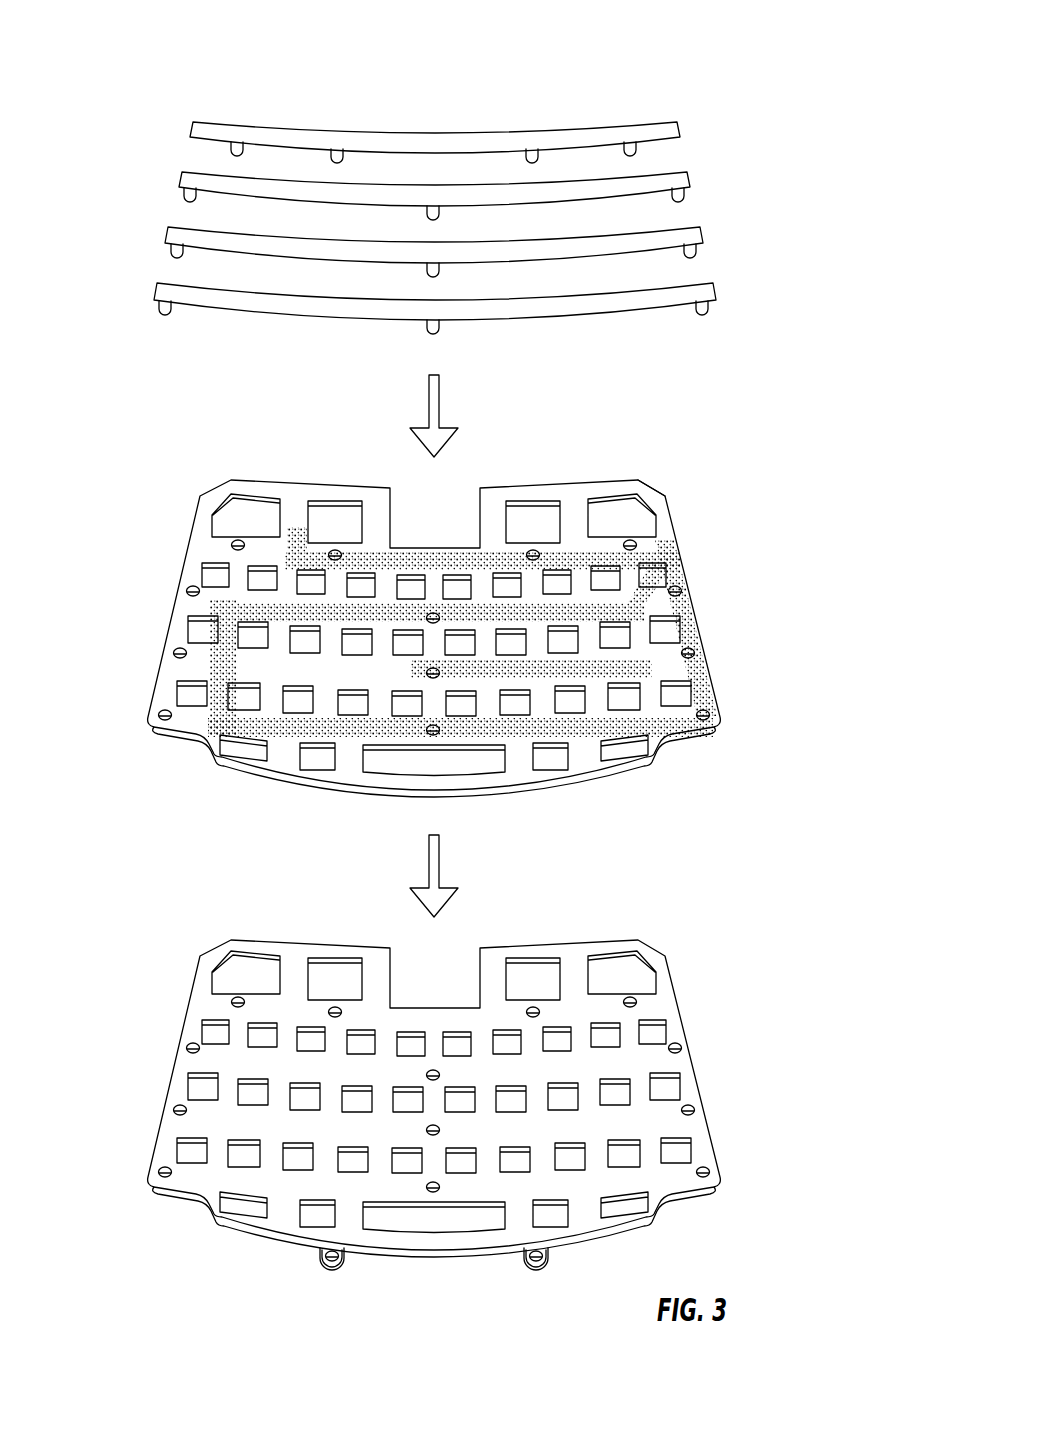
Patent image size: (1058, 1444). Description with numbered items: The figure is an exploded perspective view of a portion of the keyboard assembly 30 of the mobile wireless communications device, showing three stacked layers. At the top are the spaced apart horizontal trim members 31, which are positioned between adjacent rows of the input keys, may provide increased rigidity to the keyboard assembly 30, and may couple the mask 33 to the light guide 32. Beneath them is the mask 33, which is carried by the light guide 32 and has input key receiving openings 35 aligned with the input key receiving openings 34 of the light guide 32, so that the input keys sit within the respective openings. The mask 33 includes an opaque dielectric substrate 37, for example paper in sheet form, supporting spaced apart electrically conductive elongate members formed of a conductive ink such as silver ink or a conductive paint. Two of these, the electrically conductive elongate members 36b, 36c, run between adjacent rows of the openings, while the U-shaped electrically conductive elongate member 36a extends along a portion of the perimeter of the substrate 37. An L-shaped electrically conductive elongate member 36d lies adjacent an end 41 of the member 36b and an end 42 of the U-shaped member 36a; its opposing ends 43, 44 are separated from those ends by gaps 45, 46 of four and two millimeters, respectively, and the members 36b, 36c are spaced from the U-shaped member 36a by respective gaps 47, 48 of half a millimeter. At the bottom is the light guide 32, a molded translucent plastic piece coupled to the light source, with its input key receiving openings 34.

The keyboard assembly 30 is at (143, 120).
The spaced apart horizontal trim members 31 is at (678, 132).
The light guide 32 is at (428, 1105).
The mask 33 is at (452, 643).
The input key receiving openings 34 is at (347, 1165).
The input key receiving openings 35 is at (200, 633).
The U-shaped electrically conductive elongate member 36a is at (300, 530).
The electrically conductive elongate member 36b is at (650, 568).
The electrically conductive elongate member 36c is at (647, 667).
The L-shaped electrically conductive elongate member 36d is at (212, 723).
The opaque dielectric substrate 37 is at (663, 513).
The end of electrically conductive elongate member 36b 41 is at (268, 615).
The end of U-shaped electrically conductive elongate member 36a 42 is at (310, 730).
The end of L-shaped electrically conductive elongate member 43 is at (221, 603).
The end of L-shaped electrically conductive elongate member 44 is at (278, 733).
The gap 45 is at (253, 613).
The gap 46 is at (290, 727).
The gap 47 is at (665, 600).
The gap 48 is at (670, 658).